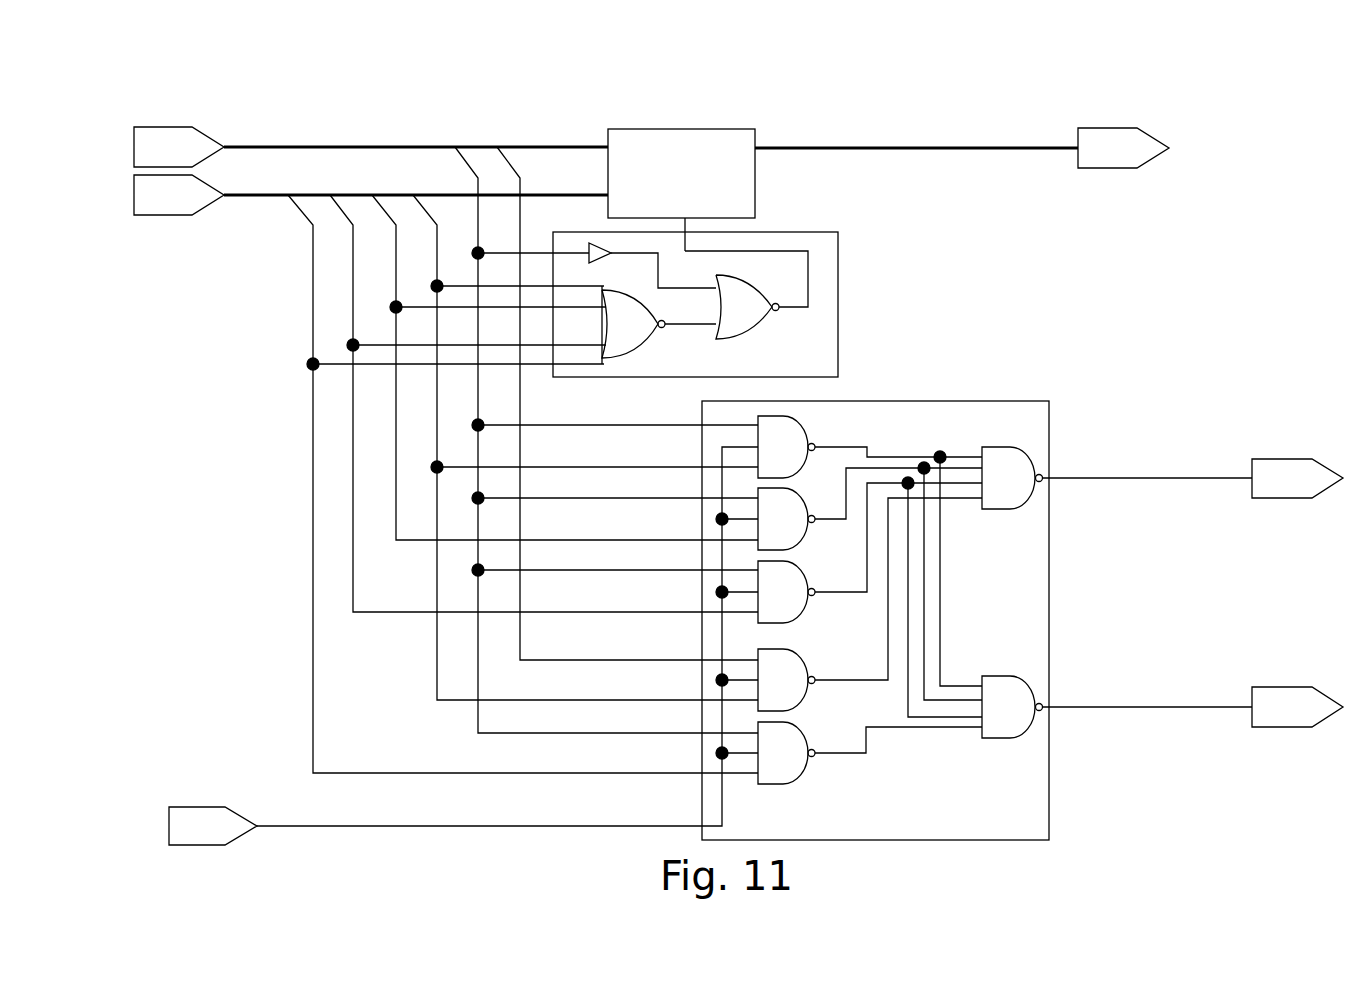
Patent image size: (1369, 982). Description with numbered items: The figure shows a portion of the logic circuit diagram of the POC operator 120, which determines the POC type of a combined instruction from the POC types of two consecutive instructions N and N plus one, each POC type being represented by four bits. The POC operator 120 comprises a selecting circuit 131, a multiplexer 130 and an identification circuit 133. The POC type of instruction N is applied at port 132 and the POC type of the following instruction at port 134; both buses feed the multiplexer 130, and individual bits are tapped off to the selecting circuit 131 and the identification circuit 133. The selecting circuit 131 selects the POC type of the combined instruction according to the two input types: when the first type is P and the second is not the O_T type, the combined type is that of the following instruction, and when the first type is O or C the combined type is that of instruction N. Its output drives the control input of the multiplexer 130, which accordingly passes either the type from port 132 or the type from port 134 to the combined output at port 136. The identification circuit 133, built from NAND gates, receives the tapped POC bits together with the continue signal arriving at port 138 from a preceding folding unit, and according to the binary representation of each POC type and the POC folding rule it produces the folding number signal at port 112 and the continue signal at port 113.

The POC operator 120 is at (528, 122).
The multiplexer 130 is at (740, 192).
The selecting circuit 131 is at (825, 332).
The identification circuit 133 is at (972, 417).
The port 132 is at (182, 138).
The port 134 is at (175, 202).
The port 136 is at (1130, 145).
The port 112 is at (1310, 478).
The port 113 is at (1305, 707).
The port 138 is at (212, 822).